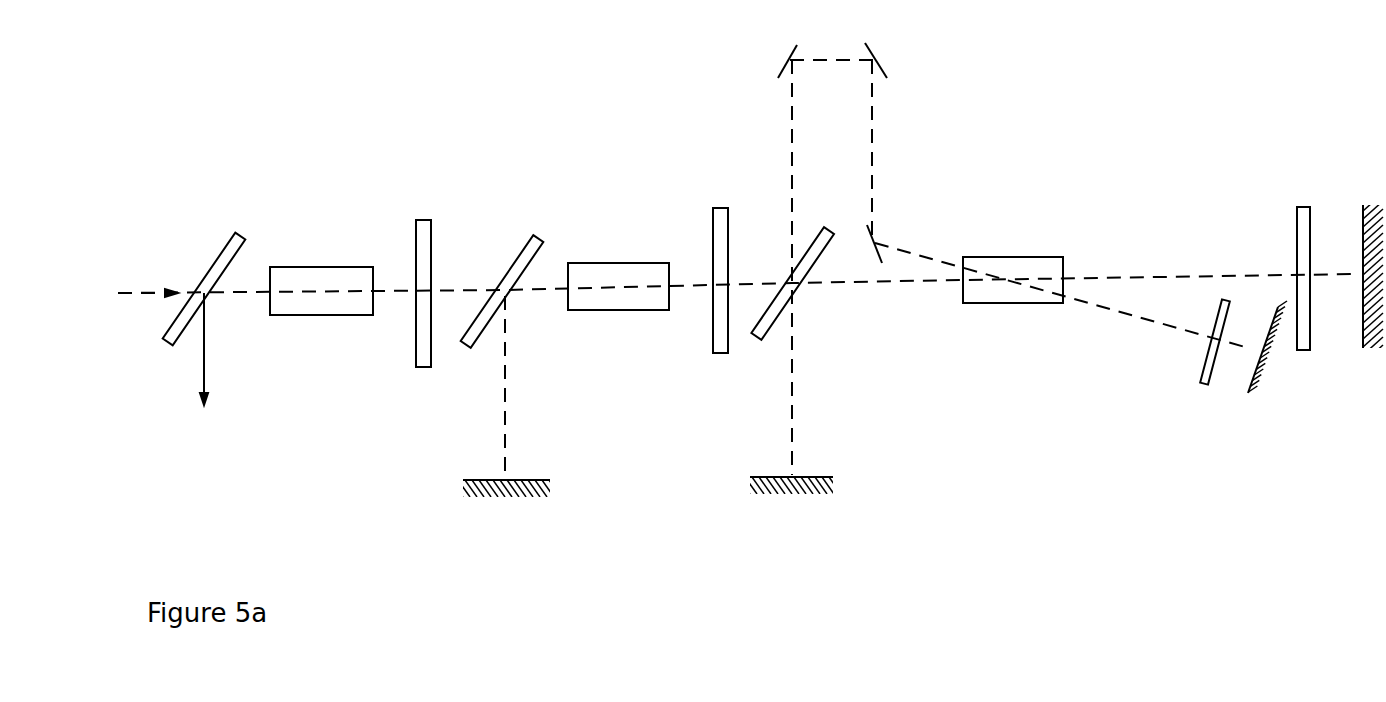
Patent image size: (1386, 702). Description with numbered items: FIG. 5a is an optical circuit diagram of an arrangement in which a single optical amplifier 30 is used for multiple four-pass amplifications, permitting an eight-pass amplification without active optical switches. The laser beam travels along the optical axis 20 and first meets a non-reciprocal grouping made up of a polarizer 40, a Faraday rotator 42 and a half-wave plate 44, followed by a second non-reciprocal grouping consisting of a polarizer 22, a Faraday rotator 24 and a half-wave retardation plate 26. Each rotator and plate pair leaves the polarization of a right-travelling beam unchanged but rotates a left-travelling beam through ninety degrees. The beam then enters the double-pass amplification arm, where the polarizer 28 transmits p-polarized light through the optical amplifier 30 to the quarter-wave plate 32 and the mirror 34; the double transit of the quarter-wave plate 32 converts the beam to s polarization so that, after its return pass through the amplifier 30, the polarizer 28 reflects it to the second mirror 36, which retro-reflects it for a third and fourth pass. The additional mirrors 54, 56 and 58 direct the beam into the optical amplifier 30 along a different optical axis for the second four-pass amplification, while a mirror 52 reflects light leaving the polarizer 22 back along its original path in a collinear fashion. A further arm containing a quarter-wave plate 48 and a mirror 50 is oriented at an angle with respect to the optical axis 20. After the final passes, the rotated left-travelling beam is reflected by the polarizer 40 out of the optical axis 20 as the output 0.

The output 0 is at (207, 369).
The optical axis 20 is at (165, 291).
The polarizer 22 is at (538, 234).
The Faraday rotator 24 is at (643, 263).
The half-wave retardation plate 26 is at (712, 207).
The polarizer 28 is at (758, 341).
The laser amplifier 30 is at (1020, 257).
The quarter-wave plate 32 is at (1296, 230).
The mirror 34 is at (1362, 205).
The second mirror 36 is at (828, 477).
The polarizer 40 is at (240, 234).
The Faraday rotator 42 is at (343, 267).
The half-wave plate 44 is at (430, 220).
The quarter-wave plate 48 is at (1203, 358).
The mirror 50 is at (1248, 393).
The mirror 52 is at (540, 480).
The mirror 54 is at (778, 72).
The mirror 56 is at (887, 73).
The mirror 58 is at (870, 240).